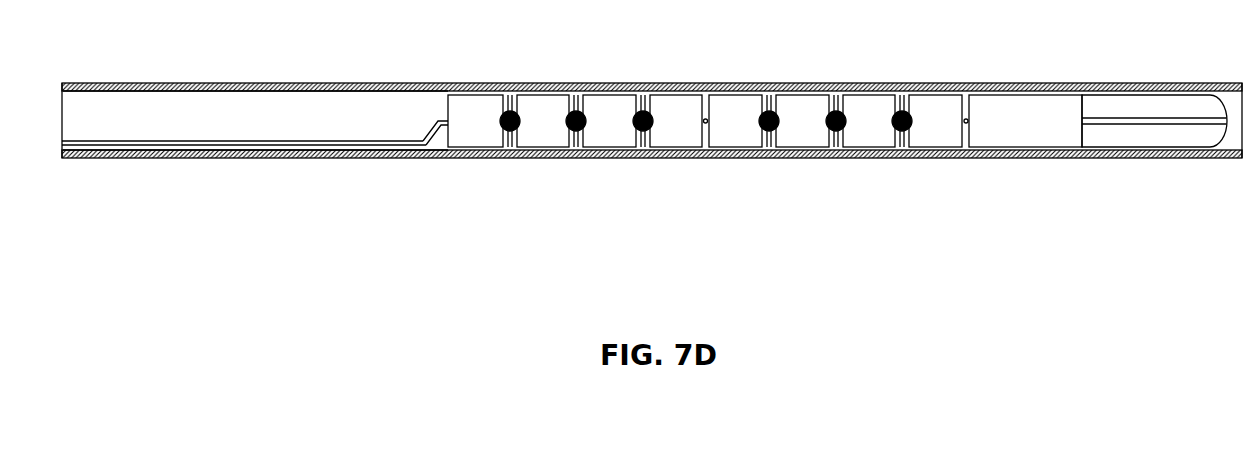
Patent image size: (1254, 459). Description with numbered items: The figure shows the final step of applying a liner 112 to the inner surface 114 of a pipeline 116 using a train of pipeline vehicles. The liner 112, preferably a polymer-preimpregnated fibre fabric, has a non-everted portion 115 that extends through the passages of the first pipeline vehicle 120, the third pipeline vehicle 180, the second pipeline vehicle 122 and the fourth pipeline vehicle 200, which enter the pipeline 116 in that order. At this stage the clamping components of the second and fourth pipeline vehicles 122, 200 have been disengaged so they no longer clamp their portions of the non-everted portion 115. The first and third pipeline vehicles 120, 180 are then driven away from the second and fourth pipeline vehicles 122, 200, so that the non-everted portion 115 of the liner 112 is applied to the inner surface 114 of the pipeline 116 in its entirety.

The pipeline 116 is at (133, 84).
The inner surface 114 is at (325, 108).
The liner 112 is at (237, 145).
The non-everted portion 115 is at (428, 144).
The fourth pipeline vehicle 200 is at (708, 83).
The second pipeline vehicle 122 is at (805, 108).
The third pipeline vehicle 180 is at (1013, 114).
The first pipeline vehicle 120 is at (1156, 103).